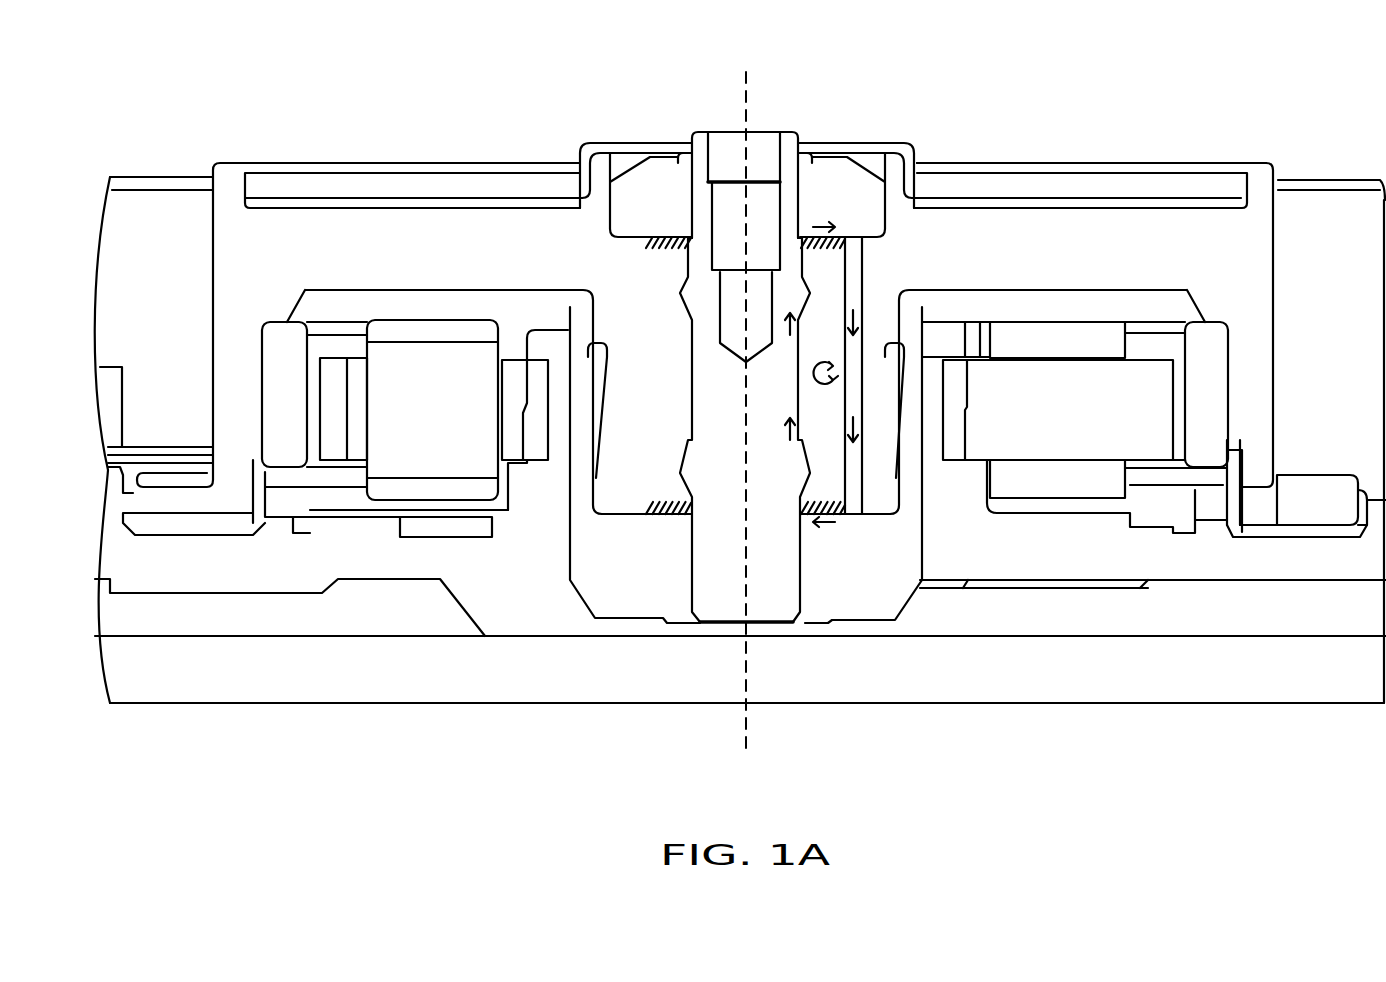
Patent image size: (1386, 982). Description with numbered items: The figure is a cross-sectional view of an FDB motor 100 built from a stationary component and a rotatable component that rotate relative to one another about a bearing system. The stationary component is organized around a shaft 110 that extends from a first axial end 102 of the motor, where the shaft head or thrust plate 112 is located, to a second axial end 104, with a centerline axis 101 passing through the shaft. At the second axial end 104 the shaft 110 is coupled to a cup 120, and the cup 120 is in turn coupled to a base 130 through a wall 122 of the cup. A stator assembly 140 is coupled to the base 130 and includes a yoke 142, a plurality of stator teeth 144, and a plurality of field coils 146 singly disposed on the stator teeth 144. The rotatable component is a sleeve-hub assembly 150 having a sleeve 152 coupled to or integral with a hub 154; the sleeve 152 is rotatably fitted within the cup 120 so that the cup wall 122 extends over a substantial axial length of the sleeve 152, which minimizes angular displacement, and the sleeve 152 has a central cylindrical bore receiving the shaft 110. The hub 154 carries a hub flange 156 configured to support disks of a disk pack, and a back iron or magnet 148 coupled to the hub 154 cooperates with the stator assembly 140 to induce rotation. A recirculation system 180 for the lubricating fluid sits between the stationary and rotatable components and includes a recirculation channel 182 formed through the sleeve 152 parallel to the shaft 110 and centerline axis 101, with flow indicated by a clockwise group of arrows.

The FDB motor 100 is at (601, 50).
The centerline axis 101 is at (745, 108).
The first axial end 102 is at (770, 118).
The second axial end 104 is at (770, 743).
The shaft 110 is at (749, 591).
The shaft head or thrust plate 112 is at (625, 223).
The cup 120 is at (831, 591).
The wall 122 is at (580, 425).
The base 130 is at (1036, 563).
The stator assembly 140 is at (1147, 303).
The yoke 142 is at (517, 388).
The stator teeth 144 is at (1037, 426).
The field coils 146 is at (407, 426).
The back iron or magnet 148 is at (280, 357).
The sleeve-hub assembly 150 is at (513, 280).
The sleeve 152 is at (622, 432).
The hub 154 is at (237, 251).
The hub flange 156 is at (1290, 518).
The recirculation system 180 is at (840, 372).
The recirculation channel 182 is at (857, 458).